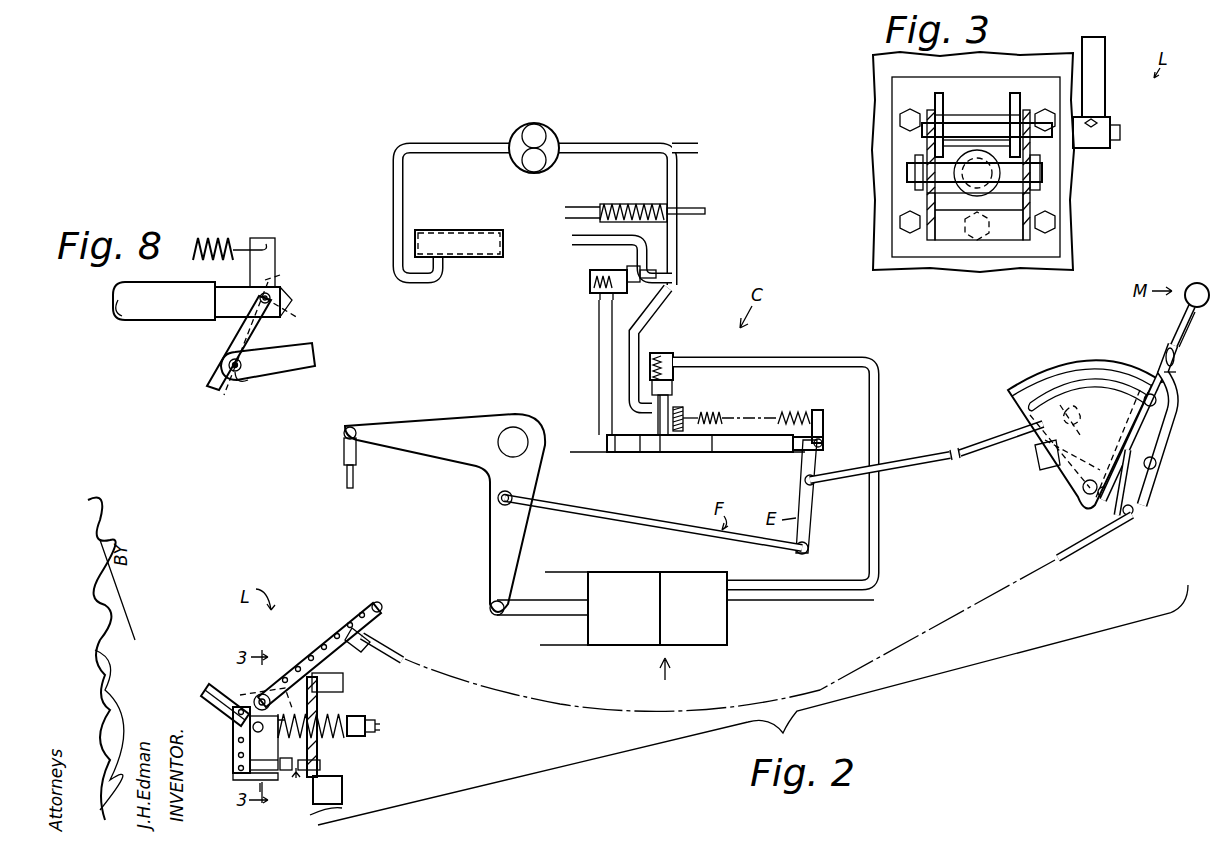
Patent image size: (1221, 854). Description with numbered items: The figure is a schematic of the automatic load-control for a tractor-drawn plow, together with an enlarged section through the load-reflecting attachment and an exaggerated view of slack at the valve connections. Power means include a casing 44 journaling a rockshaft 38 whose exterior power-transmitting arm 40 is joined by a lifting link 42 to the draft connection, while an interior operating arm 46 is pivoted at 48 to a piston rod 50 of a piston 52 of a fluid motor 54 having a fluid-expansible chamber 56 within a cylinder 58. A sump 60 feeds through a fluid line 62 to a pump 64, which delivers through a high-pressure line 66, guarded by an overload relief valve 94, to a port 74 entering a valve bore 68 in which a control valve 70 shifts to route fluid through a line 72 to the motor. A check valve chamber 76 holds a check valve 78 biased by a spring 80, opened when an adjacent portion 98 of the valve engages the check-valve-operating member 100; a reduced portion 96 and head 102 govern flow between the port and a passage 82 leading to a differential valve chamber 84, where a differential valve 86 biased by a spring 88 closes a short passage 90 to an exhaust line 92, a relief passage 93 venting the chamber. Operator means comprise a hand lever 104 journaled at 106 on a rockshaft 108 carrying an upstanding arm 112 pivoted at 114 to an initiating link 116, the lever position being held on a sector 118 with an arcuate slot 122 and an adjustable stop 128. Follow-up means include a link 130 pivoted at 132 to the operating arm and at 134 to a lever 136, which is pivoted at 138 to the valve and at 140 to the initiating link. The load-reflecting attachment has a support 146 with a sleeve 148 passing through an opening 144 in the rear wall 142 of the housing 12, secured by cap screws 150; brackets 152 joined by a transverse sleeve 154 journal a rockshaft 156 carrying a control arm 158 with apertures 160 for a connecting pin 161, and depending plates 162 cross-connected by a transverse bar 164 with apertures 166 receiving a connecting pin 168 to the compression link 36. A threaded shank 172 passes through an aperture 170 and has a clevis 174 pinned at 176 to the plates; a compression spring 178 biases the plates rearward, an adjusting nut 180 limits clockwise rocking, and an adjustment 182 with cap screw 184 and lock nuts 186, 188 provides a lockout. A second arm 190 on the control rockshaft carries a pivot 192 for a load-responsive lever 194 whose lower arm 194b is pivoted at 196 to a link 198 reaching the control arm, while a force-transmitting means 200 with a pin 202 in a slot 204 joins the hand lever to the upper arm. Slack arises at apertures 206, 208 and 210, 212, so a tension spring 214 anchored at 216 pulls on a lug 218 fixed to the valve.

In FIG. 2, the transmission and power train housing 12 is at (343, 806).
In FIG. 3, the transmission and power train housing 12 is at (1060, 258).
In FIG. 2, the compression link 36 is at (212, 692).
In FIG. 2, the rockshaft 38 is at (513, 427).
In FIG. 2, the power-transmitting arm 40 is at (417, 425).
In FIG. 2, the lifting link 42 is at (346, 478).
In FIG. 2, the casing 44 is at (700, 416).
In FIG. 2, the operating arm 46 is at (490, 533).
In FIG. 2, the pivotal connection 48 is at (495, 616).
In FIG. 2, the piston rod 50 is at (530, 616).
In FIG. 2, the piston 52 is at (620, 580).
In FIG. 2, the fluid motor 54 is at (660, 674).
In FIG. 2, the fluid-expansible chamber 56 is at (681, 608).
In FIG. 2, the cylinder 58 is at (718, 646).
In FIG. 2, the sump 60 is at (462, 234).
In FIG. 2, the fluid line 62 is at (447, 143).
In FIG. 2, the pump 64 is at (533, 125).
In FIG. 2, the high-pressure line 66 is at (698, 150).
In FIG. 2, the valve bore 68 is at (690, 454).
In FIG. 2, the control valve 70 is at (790, 454).
In FIG. 8, the control valve 70 is at (148, 316).
In FIG. 2, the line 72 is at (862, 356).
In FIG. 2, the port 74 is at (658, 418).
In FIG. 2, the check valve chamber 76 is at (648, 352).
In FIG. 2, the check valve 78 is at (672, 386).
In FIG. 2, the spring 80 is at (674, 358).
In FIG. 2, the passage 82 is at (599, 360).
In FIG. 2, the differential valve chamber 84 is at (592, 272).
In FIG. 2, the differential valve 86 is at (606, 297).
In FIG. 2, the spring 88 is at (592, 283).
In FIG. 2, the short passage 90 is at (653, 270).
In FIG. 2, the exhaust line 92 is at (572, 238).
In FIG. 2, the relief passage 93 is at (627, 262).
In FIG. 2, the overload relief valve 94 is at (632, 204).
In FIG. 2, the reduced portion 96 is at (703, 454).
In FIG. 2, the adjacent portion 98 is at (650, 454).
In FIG. 2, the check-valve-operating member 100 is at (668, 408).
In FIG. 2, the head 102 is at (609, 454).
In FIG. 2, the hand lever 104 is at (1170, 326).
In FIG. 2, the journal 106 is at (1098, 496).
In FIG. 2, the rockshaft 108 is at (1084, 490).
In FIG. 2, the upstanding arm 112 is at (1040, 466).
In FIG. 2, the pivotal connection 114 is at (1080, 424).
In FIG. 2, the initiating link 116 is at (957, 460).
In FIG. 8, the initiating link 116 is at (314, 368).
In FIG. 2, the sector 118 is at (1028, 388).
In FIG. 2, the arcuate slot 122 is at (1072, 385).
In FIG. 2, the adjustable stop 128 is at (1157, 400).
In FIG. 2, the follow-up link 130 is at (590, 514).
In FIG. 2, the pivot 132 is at (498, 498).
In FIG. 2, the pivotal connection 134 is at (808, 548).
In FIG. 2, the lever 136 is at (812, 512).
In FIG. 8, the lever 136 is at (238, 337).
In FIG. 2, the pivotal connection 138 is at (823, 443).
In FIG. 8, the pivotal connection 138 is at (271, 298).
In FIG. 2, the pivotal connection 140 is at (805, 481).
In FIG. 8, the pivotal connection 140 is at (228, 366).
In FIG. 2, the rear wall 142 is at (343, 686).
In FIG. 2, the opening 144 is at (330, 742).
In FIG. 2, the support 146 is at (307, 676).
In FIG. 3, the support 146 is at (905, 250).
In FIG. 2, the sleeve 148 is at (358, 716).
In FIG. 2, the cap screws 150 is at (286, 708).
In FIG. 3, the cap screws 150 is at (1044, 108).
In FIG. 2, the brackets 152 is at (240, 694).
In FIG. 3, the brackets 152 is at (1012, 95).
In FIG. 3, the transverse sleeve 154 is at (975, 122).
In FIG. 2, the rockshaft 156 is at (262, 694).
In FIG. 3, the rockshaft 156 is at (925, 128).
In FIG. 2, the control arm 158 is at (382, 607).
In FIG. 3, the control arm 158 is at (1100, 98).
In FIG. 2, the apertures 160 is at (322, 646).
In FIG. 2, the connecting pin 161 is at (352, 612).
In FIG. 2, the depending plates 162 is at (252, 777).
In FIG. 3, the depending plates 162 is at (928, 196).
In FIG. 2, the transverse bar 164 is at (277, 790).
In FIG. 3, the transverse bar 164 is at (1005, 235).
In FIG. 2, the apertures 166 is at (236, 757).
In FIG. 2, the connecting pin 168 is at (236, 728).
In FIG. 2, the aperture 170 is at (375, 724).
In FIG. 2, the threaded shank 172 is at (380, 728).
In FIG. 3, the threaded shank 172 is at (960, 174).
In FIG. 2, the clevis 174 is at (228, 700).
In FIG. 3, the clevis 174 is at (945, 150).
In FIG. 2, the pivot pin 176 is at (240, 775).
In FIG. 3, the pivot pin 176 is at (1042, 172).
In FIG. 2, the compression spring 178 is at (356, 738).
In FIG. 2, the adjusting nut 180 is at (378, 732).
In FIG. 2, the adjustment 182 is at (296, 780).
In FIG. 2, the cap screw 184 is at (286, 758).
In FIG. 3, the cap screw 184 is at (970, 234).
In FIG. 2, the lock nut 186 is at (328, 790).
In FIG. 2, the lock nut 188 is at (320, 765).
In FIG. 2, the second arm 190 is at (1075, 530).
In FIG. 2, the pivot 192 is at (1157, 462).
In FIG. 2, the load-responsive lever 194 is at (1178, 418).
In FIG. 2, the lower arm 194b is at (1122, 514).
In FIG. 2, the pivot 196 is at (1134, 508).
In FIG. 2, the link 198 is at (1112, 528).
In FIG. 2, the force-transmitting means 200 is at (1182, 346).
In FIG. 2, the pin 202 is at (1176, 358).
In FIG. 2, the slot 204 is at (1176, 373).
In FIG. 8, the aperture 206 is at (251, 277).
In FIG. 8, the aperture 208 is at (299, 301).
In FIG. 8, the aperture 210 is at (248, 380).
In FIG. 8, the aperture 212 is at (222, 395).
In FIG. 2, the tension spring 214 is at (797, 416).
In FIG. 8, the tension spring 214 is at (225, 244).
In FIG. 2, the anchor 216 is at (716, 440).
In FIG. 2, the lug 218 is at (817, 410).